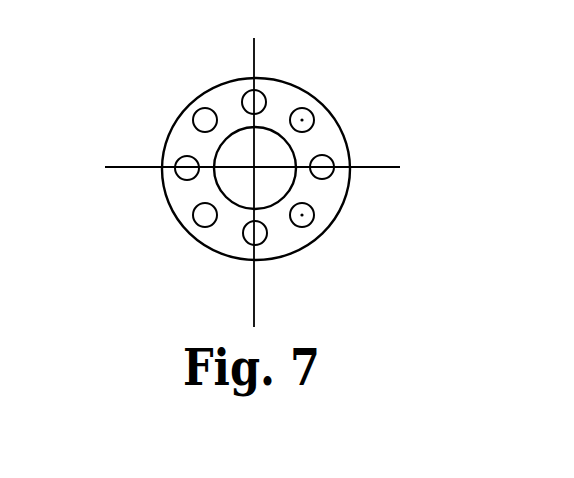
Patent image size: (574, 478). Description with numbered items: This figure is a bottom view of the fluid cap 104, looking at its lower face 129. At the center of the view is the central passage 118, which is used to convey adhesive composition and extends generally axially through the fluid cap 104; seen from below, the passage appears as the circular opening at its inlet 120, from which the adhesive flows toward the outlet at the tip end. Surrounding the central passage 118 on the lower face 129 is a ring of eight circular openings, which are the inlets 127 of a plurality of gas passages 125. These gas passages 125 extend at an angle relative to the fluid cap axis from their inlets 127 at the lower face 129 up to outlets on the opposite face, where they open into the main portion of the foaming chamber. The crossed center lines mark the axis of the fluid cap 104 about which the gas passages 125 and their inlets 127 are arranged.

The fluid cap 104 is at (180, 57).
The central passage 118 is at (269, 137).
The inlet 120 is at (298, 162).
The gas passages 125 is at (205, 215).
The inlets 127 is at (314, 215).
The lower face 129 is at (297, 93).